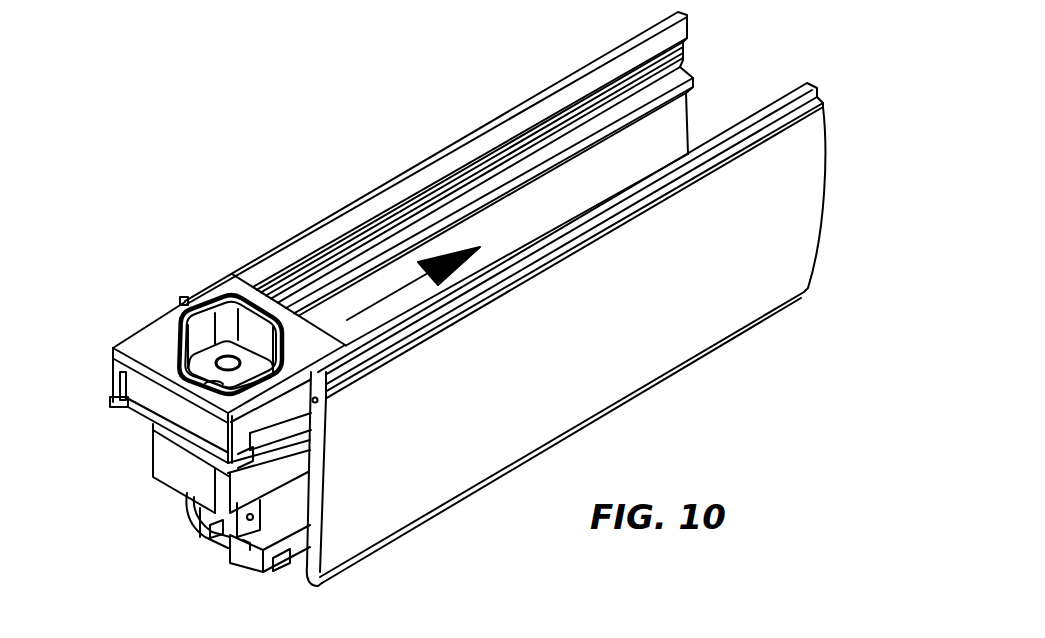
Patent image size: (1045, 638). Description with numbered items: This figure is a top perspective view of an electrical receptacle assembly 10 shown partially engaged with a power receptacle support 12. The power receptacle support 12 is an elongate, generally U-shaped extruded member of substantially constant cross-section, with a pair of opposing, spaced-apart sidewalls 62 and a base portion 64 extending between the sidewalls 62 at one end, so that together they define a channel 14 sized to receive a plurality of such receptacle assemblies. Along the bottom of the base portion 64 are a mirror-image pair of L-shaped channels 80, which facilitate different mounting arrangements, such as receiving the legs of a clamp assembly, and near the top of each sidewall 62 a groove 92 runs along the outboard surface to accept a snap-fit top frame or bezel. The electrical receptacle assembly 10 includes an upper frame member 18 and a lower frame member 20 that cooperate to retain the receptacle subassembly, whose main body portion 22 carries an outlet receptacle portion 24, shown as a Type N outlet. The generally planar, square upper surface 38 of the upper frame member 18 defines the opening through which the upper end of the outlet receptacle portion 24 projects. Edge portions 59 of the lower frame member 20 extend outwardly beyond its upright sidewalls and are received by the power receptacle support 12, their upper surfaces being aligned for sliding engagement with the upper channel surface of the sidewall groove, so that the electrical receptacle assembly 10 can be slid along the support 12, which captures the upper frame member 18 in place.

The electrical receptacle assembly 10 is at (112, 290).
The power receptacle support 12 is at (335, 210).
The channel 14 is at (752, 82).
The upper frame member 18 is at (110, 359).
The lower frame member 20 is at (143, 418).
The main body portion 22 is at (163, 465).
The outlet receptacle portion 24 is at (206, 318).
The upper surface 38 is at (148, 345).
The edge portions 59 is at (318, 426).
The sidewalls 62 is at (410, 170).
The base portion 64 is at (233, 574).
The L-shaped channels 80 is at (222, 555).
The grooves 92 is at (640, 224).